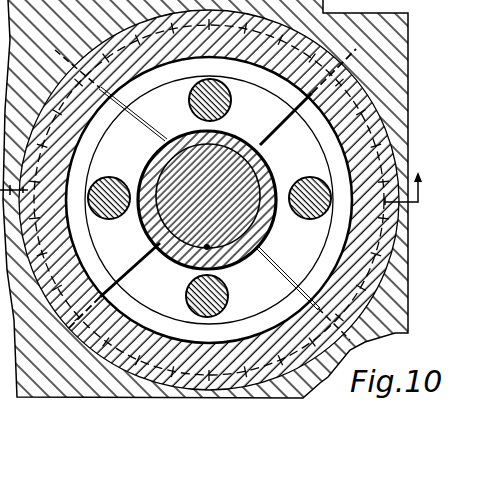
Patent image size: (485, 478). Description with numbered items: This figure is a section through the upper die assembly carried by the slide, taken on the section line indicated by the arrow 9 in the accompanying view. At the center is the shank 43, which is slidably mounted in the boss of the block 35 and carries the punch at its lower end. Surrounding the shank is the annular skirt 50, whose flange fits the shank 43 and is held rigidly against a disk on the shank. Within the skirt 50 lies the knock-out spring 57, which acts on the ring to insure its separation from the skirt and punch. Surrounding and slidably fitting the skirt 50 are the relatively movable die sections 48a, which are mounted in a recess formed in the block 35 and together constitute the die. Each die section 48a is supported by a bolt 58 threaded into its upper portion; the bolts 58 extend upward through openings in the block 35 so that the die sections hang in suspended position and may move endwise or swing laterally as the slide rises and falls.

The block 35 is at (405, 160).
The shank 43 is at (236, 178).
The spring 57 is at (230, 237).
The annular skirt 50 is at (175, 250).
The bolt 58 is at (241, 290).
The die sections 48a is at (180, 113).
The section line 9- 9 is at (221, 188).